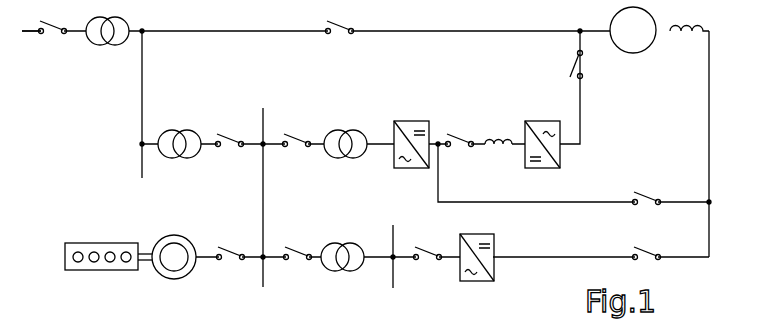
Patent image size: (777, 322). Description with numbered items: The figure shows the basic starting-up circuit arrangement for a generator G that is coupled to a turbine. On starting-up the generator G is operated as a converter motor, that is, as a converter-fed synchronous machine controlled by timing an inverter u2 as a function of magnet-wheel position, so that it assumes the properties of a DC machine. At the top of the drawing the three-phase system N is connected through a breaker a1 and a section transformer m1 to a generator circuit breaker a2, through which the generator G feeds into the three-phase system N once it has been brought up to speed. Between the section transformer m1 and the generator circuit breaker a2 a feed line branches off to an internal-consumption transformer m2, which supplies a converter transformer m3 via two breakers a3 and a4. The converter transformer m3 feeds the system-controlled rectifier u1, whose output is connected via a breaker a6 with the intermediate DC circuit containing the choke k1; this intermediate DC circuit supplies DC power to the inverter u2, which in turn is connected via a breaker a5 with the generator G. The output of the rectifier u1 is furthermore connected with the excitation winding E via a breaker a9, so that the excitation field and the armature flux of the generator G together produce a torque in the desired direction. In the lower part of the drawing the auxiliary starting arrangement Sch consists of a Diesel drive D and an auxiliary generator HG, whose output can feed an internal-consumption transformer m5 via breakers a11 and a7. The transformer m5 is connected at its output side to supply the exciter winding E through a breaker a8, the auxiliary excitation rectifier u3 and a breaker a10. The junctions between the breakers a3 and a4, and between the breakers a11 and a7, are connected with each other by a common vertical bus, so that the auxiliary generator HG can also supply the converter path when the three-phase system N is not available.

The three-phase system N is at (33, 55).
The breaker a1 is at (53, 26).
The section transformer m1 is at (95, 45).
The generator circuit breaker a2 is at (340, 26).
The generator G is at (633, 30).
The breaker a5 is at (575, 66).
The excitation winding E is at (671, 36).
The internal-consumption transformer m2 is at (167, 158).
The breaker a3 is at (230, 138).
The breaker a4 is at (297, 138).
The converter transformer m3 is at (333, 158).
The rectifier u1 is at (430, 130).
The breaker a6 is at (459, 139).
The choke k1 is at (492, 159).
The inverter u2 is at (525, 130).
The breaker a9 is at (645, 196).
The Diesel drive D is at (104, 242).
The auxiliary starting arrangement Sch is at (145, 270).
The auxiliary generator HG is at (176, 235).
The breaker a11 is at (231, 251).
The breaker a7 is at (298, 251).
The internal-consumption transformer m5 is at (334, 243).
The breaker a8 is at (428, 251).
The auxiliary excitation rectifier u3 is at (493, 246).
The breaker a10 is at (645, 251).